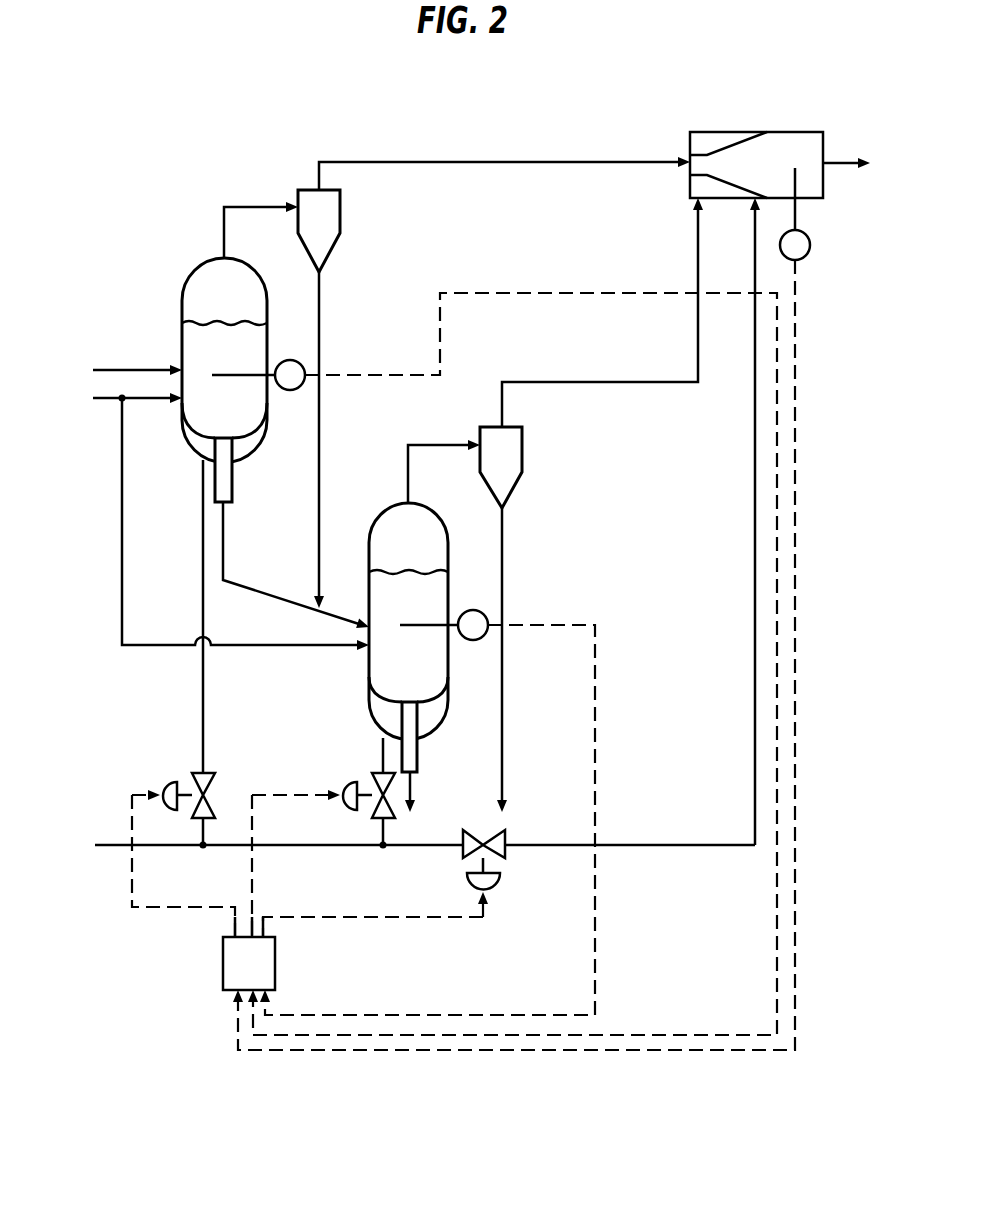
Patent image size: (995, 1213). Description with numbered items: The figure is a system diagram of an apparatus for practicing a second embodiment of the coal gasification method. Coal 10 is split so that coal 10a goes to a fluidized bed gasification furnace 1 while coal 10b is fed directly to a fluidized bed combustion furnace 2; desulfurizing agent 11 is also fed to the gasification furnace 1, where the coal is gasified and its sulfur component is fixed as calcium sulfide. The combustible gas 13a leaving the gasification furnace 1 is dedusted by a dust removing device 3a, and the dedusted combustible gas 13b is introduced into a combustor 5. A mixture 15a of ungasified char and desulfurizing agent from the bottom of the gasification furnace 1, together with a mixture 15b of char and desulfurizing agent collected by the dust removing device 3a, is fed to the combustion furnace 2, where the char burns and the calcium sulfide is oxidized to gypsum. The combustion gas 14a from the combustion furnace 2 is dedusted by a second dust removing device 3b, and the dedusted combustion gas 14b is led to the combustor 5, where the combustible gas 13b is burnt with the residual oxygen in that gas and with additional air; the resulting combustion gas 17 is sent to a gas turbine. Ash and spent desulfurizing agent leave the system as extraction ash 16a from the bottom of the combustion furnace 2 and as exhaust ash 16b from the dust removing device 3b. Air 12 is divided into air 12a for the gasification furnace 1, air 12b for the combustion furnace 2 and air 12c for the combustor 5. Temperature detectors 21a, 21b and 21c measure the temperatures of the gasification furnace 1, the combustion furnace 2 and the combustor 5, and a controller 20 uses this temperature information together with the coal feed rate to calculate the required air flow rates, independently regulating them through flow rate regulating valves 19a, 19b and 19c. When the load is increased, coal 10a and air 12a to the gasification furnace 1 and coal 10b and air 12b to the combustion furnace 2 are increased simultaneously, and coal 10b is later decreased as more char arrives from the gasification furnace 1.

The fluidized bed gasification furnace 1 is at (185, 278).
The fluidized bed combustion furnace 2 is at (393, 503).
The dust removing device 3a is at (342, 215).
The dust removing device 3b is at (523, 455).
The combustor 5 is at (722, 130).
The coal 10 is at (110, 403).
The coal 10a is at (155, 402).
The coal 10b is at (123, 604).
The desulfurizing agent 11 is at (115, 368).
The air 12 is at (112, 845).
The air 12a is at (203, 690).
The air 12b is at (382, 752).
The air 12c is at (708, 843).
The combustible gas 13a is at (260, 205).
The combustible gas 13b is at (487, 160).
The combustion gas 14a is at (452, 442).
The combustion gas 14b is at (598, 378).
The mixture of char and desulfurizing agent 15a is at (262, 558).
The mixture of char and desulfurizing agent 15b is at (320, 320).
The extraction ash 16a is at (443, 789).
The exhaust ash 16b is at (503, 782).
The combustion gas 17 is at (832, 162).
The flow rate regulating valve 19a is at (158, 785).
The flow rate regulating valve 19b is at (342, 808).
The flow rate regulating valve 19c is at (537, 889).
The controller 20 is at (222, 970).
The temperature detector 21a is at (293, 393).
The temperature detector 21b is at (477, 643).
The temperature detector 21c is at (840, 255).